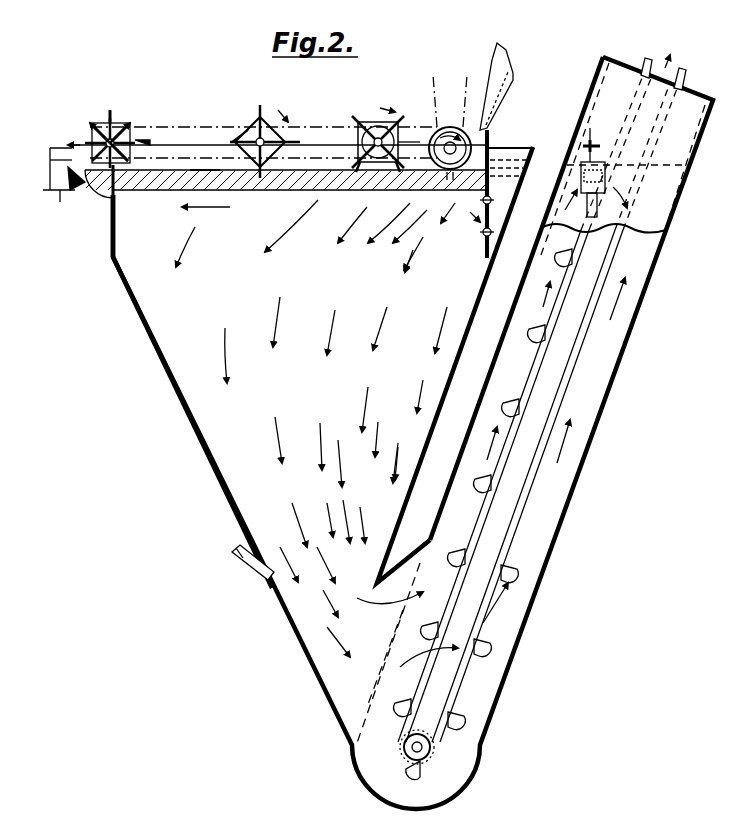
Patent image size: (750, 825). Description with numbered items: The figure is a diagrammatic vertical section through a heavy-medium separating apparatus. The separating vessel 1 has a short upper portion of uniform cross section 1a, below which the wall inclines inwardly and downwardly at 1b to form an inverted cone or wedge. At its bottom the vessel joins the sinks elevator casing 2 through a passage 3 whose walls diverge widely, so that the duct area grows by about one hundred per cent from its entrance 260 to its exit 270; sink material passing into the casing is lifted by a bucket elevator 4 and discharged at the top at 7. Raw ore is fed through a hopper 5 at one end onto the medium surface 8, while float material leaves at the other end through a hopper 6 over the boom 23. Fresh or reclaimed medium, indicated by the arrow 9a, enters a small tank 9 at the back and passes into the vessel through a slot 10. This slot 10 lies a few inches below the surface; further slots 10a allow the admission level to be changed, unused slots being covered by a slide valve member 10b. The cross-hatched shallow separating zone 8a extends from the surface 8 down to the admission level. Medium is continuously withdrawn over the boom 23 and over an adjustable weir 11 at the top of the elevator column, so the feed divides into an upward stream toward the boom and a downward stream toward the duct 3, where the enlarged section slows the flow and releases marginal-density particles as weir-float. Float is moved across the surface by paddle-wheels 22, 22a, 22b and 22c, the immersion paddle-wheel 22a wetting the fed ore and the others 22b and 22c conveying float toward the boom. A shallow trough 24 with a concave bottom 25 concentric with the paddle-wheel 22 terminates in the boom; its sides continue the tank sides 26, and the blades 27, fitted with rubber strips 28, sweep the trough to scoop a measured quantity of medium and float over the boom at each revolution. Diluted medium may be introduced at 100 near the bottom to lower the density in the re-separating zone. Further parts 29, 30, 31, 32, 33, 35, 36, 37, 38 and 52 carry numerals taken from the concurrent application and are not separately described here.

The separating vessel 1 is at (178, 401).
The uniform cross-section portion 1a is at (114, 233).
The inwardly inclined portion 1b is at (145, 308).
The sinks elevator casing 2 is at (626, 352).
The passage 3 is at (404, 560).
The elevator 4 is at (528, 335).
The hopper 5 is at (496, 63).
The hopper 6 is at (48, 170).
The sink discharge 7 is at (668, 58).
The medium surface level 8 is at (318, 168).
The shallow separating zone 8a is at (202, 168).
The medium feed tank 9 is at (485, 256).
The medium feed arrow 9a is at (513, 138).
The slot 10 is at (500, 180).
The further slots 10a is at (492, 200).
The slide valve member 10b is at (483, 232).
The weir 11 is at (606, 172).
The paddle-wheel 22 is at (100, 125).
The immersion paddle-wheel 22a is at (440, 118).
The conveying paddle-wheel 22b is at (376, 116).
The conveying paddle-wheel 22c is at (265, 108).
The boom 23 is at (68, 160).
The trough 24 is at (83, 190).
The concave bottom 25 is at (112, 200).
The tank sides 26 is at (190, 127).
The blades 27 is at (112, 115).
The strips 28 is at (94, 130).
The wheel arm 29 is at (135, 132).
The adjusting rod 30 is at (100, 122).
The wheel arm 31 is at (170, 142).
The water trough 32 is at (510, 159).
The supply pipe 33 is at (450, 120).
The material flow 35 is at (389, 215).
The rotation arrow 36 is at (365, 118).
The material flow 37 is at (247, 130).
The material flow 38 is at (301, 189).
The material flow 52 is at (410, 217).
The diluted medium introduction point 100 is at (246, 572).
The duct entrance 260 is at (346, 672).
The duct exit 270 is at (388, 652).